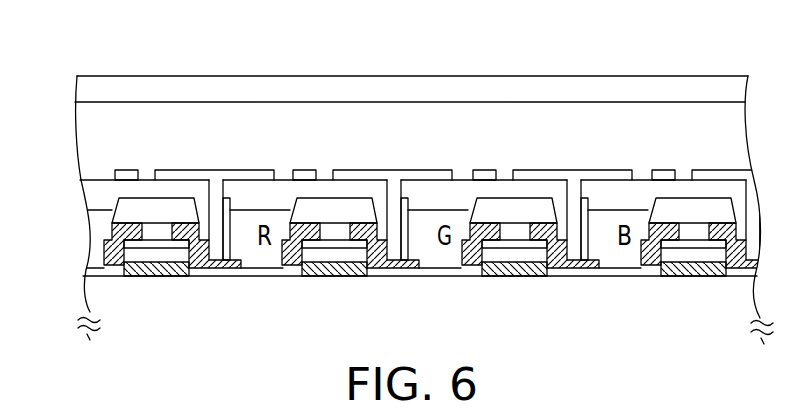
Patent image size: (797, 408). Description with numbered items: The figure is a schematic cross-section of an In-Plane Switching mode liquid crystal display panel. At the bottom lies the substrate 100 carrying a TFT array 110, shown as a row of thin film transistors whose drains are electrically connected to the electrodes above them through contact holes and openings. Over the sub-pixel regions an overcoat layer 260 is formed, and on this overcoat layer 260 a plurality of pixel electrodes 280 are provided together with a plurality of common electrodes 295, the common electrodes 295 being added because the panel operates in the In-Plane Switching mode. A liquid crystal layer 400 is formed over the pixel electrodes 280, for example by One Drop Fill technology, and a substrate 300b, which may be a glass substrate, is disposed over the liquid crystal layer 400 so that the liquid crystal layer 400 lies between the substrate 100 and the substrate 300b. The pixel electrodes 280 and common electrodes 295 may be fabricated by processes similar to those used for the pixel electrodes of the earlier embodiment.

The substrate 100 is at (97, 308).
The TFT array 110 is at (72, 223).
The overcoat layer 260 is at (145, 188).
The pixel electrodes 280 is at (420, 175).
The common electrodes 295 is at (305, 175).
The substrate 300b is at (547, 90).
The liquid crystal layer 400 is at (223, 118).